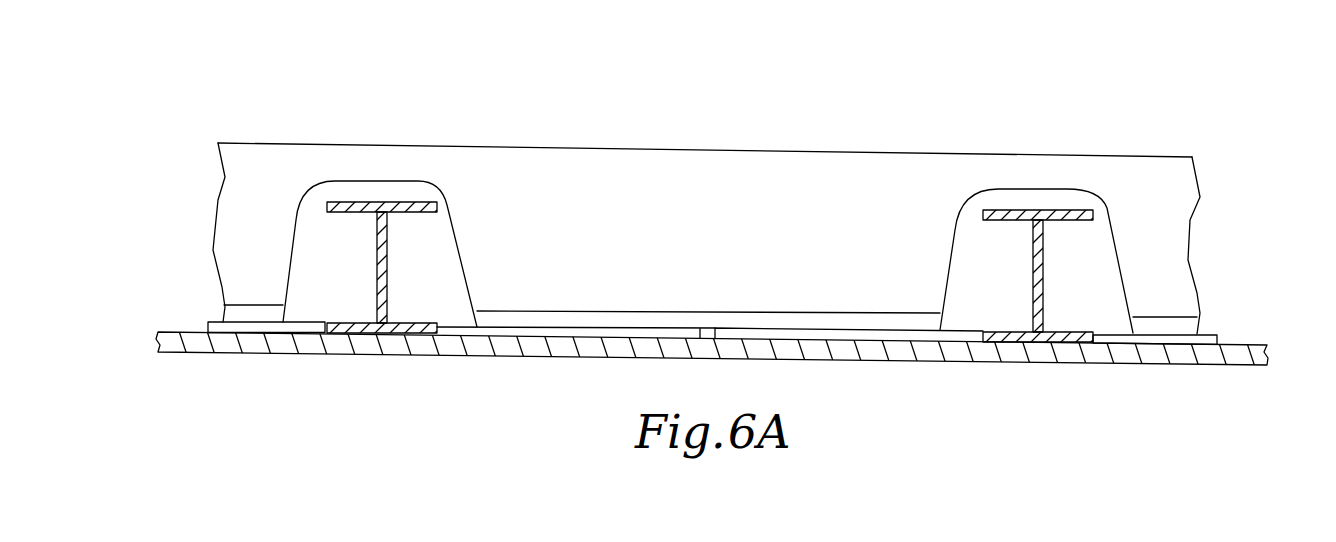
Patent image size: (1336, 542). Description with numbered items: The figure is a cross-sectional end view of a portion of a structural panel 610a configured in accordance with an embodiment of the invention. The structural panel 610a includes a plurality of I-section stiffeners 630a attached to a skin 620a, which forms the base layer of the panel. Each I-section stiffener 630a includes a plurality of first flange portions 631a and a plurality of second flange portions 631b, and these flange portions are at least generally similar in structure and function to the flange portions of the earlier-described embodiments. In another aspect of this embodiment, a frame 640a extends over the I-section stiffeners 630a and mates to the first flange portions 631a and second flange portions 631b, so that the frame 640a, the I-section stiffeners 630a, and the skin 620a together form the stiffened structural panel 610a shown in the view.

The structural panel 610a is at (1147, 112).
The skin 620a is at (178, 332).
The I-section stiffener 630a is at (392, 202).
The first flange portion 631a is at (245, 322).
The second flange portion 631b is at (552, 327).
The frame 640a is at (697, 148).